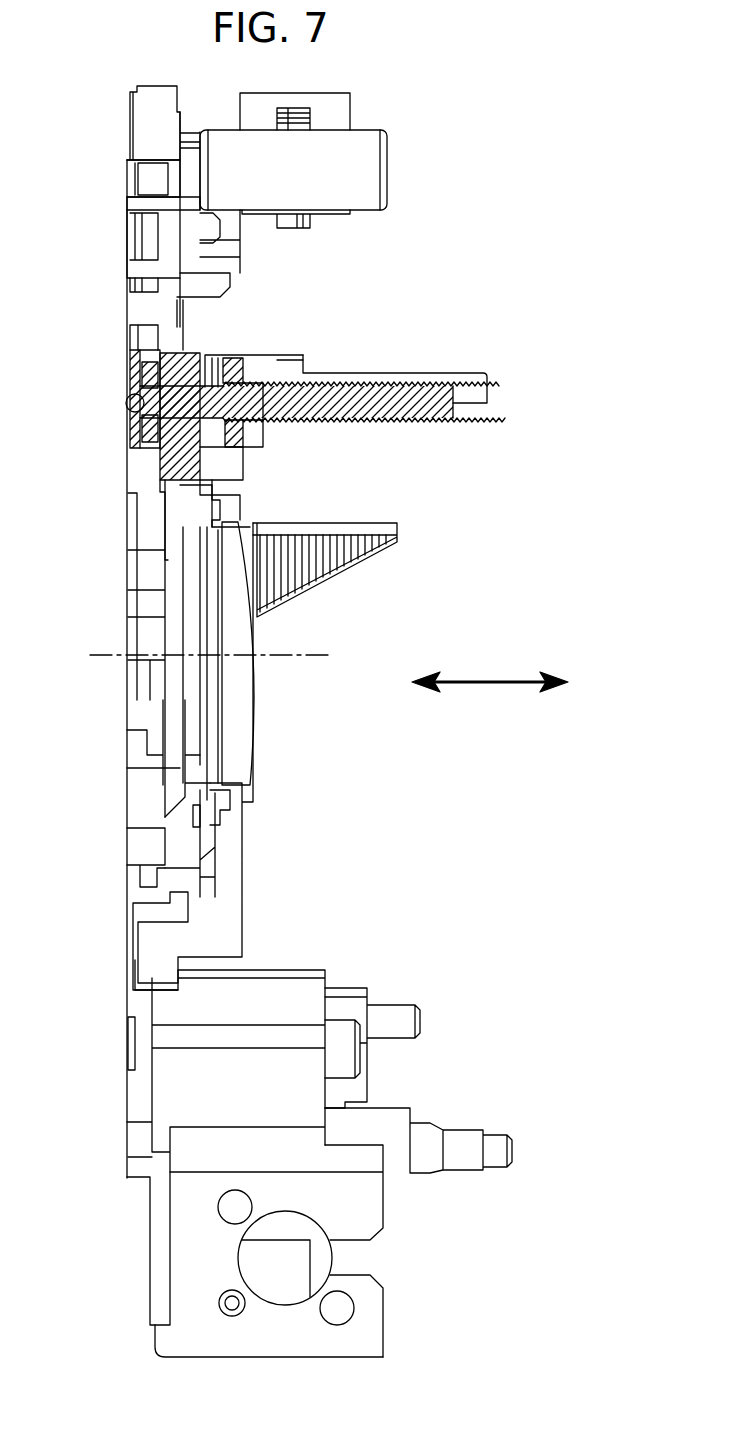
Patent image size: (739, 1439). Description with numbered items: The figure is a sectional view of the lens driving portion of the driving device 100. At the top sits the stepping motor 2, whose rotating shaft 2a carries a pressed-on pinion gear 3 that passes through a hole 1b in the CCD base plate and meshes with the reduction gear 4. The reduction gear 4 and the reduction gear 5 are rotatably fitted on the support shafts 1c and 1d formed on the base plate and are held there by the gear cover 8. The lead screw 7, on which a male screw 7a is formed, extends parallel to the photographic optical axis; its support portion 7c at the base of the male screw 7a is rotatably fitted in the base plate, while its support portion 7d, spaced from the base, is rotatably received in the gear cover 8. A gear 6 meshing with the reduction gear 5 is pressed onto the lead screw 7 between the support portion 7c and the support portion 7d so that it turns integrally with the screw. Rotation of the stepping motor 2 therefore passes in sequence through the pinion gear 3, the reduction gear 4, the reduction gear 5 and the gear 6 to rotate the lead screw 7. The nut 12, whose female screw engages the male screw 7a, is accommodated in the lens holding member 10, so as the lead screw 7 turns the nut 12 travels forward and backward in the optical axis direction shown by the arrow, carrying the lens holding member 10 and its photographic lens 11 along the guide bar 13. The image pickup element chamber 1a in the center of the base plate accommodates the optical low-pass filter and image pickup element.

The driving device 100 is at (540, 261).
The image pickup element chamber 1a is at (178, 775).
The hole 1b is at (177, 158).
The support shaft 1c is at (132, 268).
The support shaft 1d is at (133, 308).
The stepping motor 2 is at (387, 174).
The rotating shaft 2a is at (130, 205).
The pinion gear 3 is at (145, 182).
The reduction gear 4 is at (145, 235).
The reduction gear 5 is at (150, 335).
The gear 6 is at (150, 385).
The lead screw 7 is at (453, 410).
The male screw 7a is at (373, 423).
The support portion 7c is at (173, 410).
The support portion 7d is at (130, 401).
The gear cover 8 is at (130, 430).
The lens holding member 10 is at (240, 838).
The photographic lens 11 is at (248, 700).
The nut 12 is at (243, 362).
The guide bar 13 is at (477, 387).